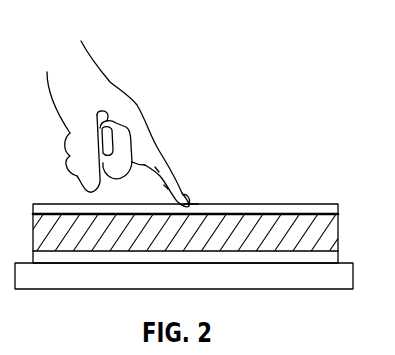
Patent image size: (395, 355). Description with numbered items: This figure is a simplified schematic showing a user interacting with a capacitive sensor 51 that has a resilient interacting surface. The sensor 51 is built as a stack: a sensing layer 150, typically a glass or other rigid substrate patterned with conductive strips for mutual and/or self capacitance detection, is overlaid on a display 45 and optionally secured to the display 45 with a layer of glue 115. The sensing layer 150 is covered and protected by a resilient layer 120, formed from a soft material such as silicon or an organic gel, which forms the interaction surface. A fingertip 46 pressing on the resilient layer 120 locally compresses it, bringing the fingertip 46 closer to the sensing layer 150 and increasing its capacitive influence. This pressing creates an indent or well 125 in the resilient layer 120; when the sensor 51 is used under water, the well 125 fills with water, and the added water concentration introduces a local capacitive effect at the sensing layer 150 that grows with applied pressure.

The sensor 51 is at (315, 137).
The fingertip 46 is at (180, 173).
The indent or well 125 is at (196, 204).
The resilient layer 120 is at (227, 204).
The sensing layer 150 is at (339, 235).
The layer of glue 115 is at (339, 261).
The display 45 is at (290, 290).